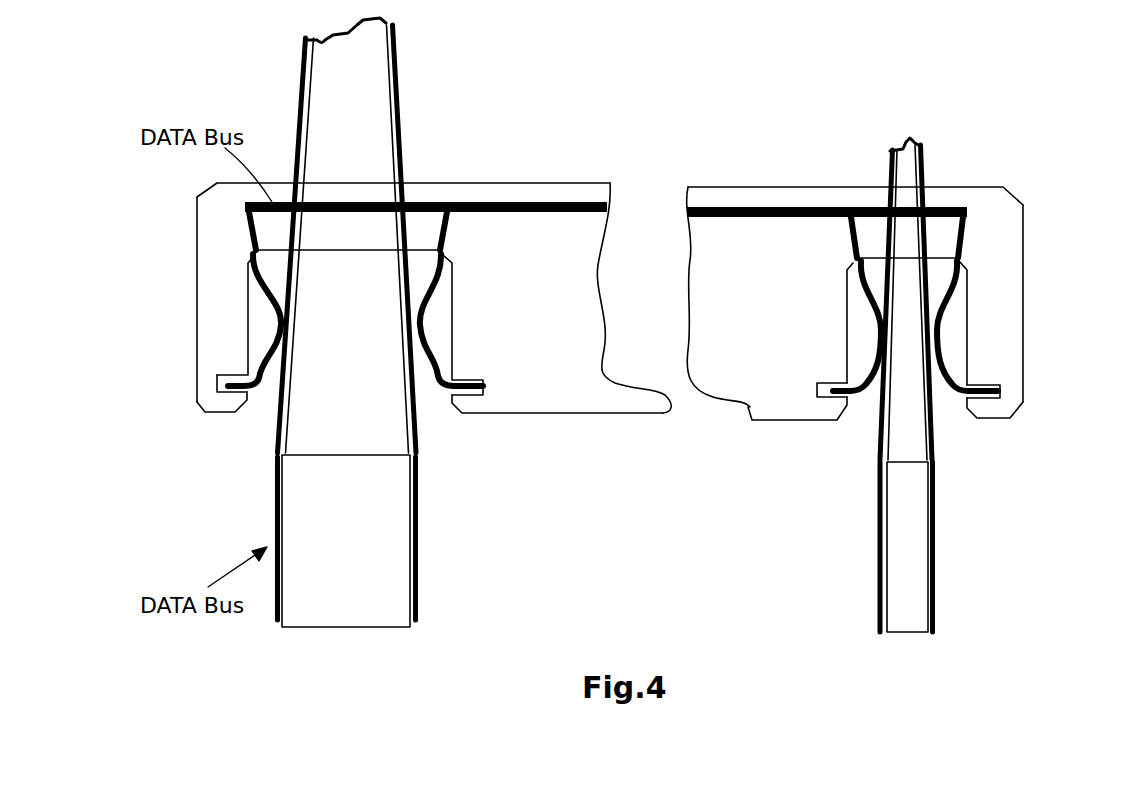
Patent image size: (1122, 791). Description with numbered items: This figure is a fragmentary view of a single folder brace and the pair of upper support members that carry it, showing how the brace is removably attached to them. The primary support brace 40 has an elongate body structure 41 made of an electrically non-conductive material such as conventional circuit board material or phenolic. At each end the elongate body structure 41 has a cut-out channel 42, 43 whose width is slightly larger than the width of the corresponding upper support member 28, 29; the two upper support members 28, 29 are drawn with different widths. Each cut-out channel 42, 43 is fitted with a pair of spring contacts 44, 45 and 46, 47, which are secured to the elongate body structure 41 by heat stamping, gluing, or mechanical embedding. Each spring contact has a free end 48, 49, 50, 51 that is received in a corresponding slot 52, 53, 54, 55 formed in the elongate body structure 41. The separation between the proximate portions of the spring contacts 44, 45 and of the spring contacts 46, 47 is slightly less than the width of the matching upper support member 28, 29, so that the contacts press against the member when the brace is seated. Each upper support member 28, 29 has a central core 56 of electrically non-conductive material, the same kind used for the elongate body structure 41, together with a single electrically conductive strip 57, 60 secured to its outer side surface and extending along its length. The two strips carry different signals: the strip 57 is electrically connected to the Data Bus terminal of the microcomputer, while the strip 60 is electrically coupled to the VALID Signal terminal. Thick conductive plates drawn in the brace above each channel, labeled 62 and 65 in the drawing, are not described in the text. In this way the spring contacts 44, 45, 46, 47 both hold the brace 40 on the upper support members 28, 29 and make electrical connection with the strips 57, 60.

The upper support member 28 is at (347, 630).
The upper support member 29 is at (900, 634).
The primary support brace 40 is at (511, 182).
The elongate body structure 41 is at (578, 192).
The cut-out channel 42 is at (247, 353).
The cut-out channel 43 is at (967, 347).
The spring contact 44 is at (263, 392).
The spring contact 45 is at (422, 353).
The spring contact 46 is at (879, 342).
The spring contact 47 is at (943, 368).
The free end 48 is at (237, 410).
The free end 49 is at (460, 395).
The free end 50 is at (833, 400).
The free end 51 is at (962, 400).
The slot 52 is at (217, 385).
The slot 53 is at (485, 390).
The slot 54 is at (817, 385).
The slot 55 is at (1000, 390).
The central core 56 is at (356, 552).
The electrically conductive strip 57 is at (275, 502).
The electrically conductive strip 60 is at (935, 577).
The contact plate 62 is at (418, 202).
The contact plate 65 is at (833, 208).